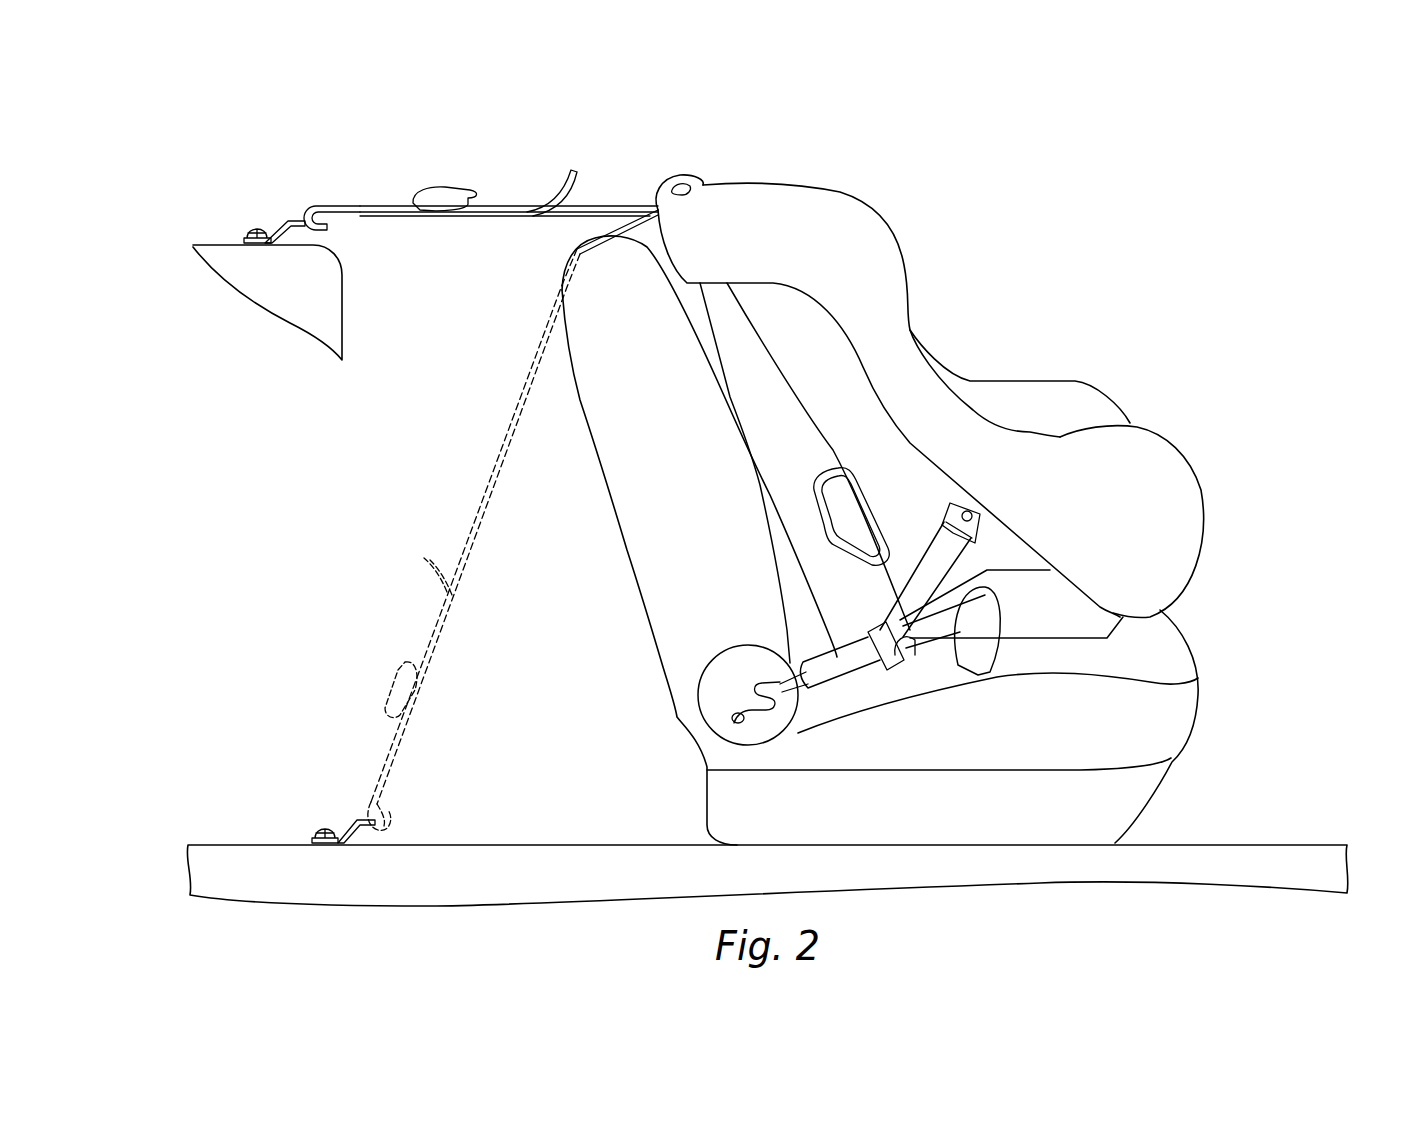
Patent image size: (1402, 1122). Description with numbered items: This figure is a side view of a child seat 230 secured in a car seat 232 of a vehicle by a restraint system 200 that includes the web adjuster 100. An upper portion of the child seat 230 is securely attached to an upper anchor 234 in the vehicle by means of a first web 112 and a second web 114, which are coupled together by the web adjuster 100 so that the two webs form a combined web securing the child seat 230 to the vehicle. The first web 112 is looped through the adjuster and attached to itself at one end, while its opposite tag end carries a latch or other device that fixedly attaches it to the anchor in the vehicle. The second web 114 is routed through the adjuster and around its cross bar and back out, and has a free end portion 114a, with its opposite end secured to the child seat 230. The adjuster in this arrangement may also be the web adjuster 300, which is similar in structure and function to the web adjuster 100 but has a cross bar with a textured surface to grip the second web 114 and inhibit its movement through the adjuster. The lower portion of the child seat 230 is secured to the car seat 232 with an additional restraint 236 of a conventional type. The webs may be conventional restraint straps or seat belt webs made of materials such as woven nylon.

The restraint system 200 is at (382, 114).
The web adjuster 100 is at (374, 414).
The web adjuster 300 is at (437, 187).
The first web 112 is at (365, 203).
The second web 114 is at (602, 205).
The free end portion 114a is at (563, 187).
The child seat 230 is at (1160, 445).
The car seat 232 is at (1178, 640).
The upper anchor 234 is at (252, 227).
The restraint 236 is at (840, 667).